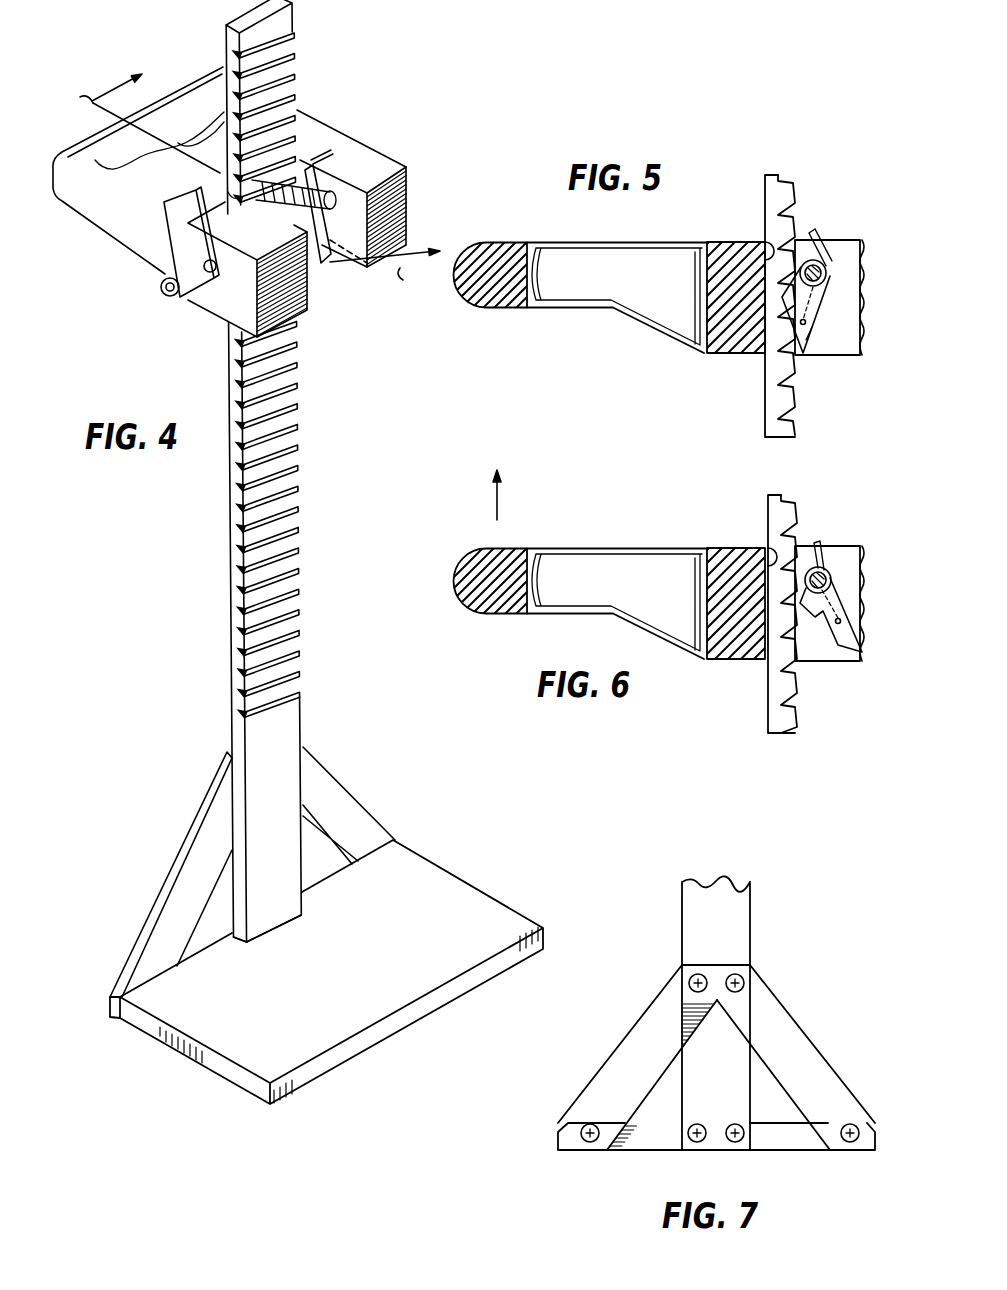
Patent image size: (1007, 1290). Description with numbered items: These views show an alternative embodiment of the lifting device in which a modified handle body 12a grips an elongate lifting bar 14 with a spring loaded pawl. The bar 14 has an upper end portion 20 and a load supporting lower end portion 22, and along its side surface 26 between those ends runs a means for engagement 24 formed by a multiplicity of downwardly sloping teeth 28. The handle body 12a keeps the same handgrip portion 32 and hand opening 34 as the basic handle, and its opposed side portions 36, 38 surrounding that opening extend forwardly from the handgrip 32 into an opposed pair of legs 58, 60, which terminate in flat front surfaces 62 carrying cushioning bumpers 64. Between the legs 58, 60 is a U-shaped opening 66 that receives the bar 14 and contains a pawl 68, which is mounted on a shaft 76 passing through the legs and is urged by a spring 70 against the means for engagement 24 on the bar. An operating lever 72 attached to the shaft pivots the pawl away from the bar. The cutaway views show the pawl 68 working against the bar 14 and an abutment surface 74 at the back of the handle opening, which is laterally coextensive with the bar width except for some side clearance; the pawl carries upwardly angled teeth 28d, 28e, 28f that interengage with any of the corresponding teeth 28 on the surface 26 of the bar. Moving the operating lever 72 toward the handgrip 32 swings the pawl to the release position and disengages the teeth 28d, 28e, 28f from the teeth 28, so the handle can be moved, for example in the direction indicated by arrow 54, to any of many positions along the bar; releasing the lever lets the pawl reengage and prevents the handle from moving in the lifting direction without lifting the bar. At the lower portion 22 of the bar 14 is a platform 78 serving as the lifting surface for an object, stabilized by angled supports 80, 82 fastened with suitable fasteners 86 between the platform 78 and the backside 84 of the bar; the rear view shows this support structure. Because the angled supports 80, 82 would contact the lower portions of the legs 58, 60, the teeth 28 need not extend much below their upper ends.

In FIG. 4, the modified handle body 12a is at (252, 207).
In FIG. 4, the bar 14 is at (238, 471).
In FIG. 5, the bar 14 is at (739, 293).
In FIG. 6, the bar 14 is at (759, 612).
In FIG. 7, the bar 14 is at (749, 1013).
In FIG. 4, the upper end portion 20 is at (287, 20).
In FIG. 4, the lower end portion 22 is at (232, 898).
In FIG. 4, the means for engagement 24 is at (298, 376).
In FIG. 4, the side surface 26 is at (285, 732).
In FIG. 4, the teeth 28 is at (294, 462).
In FIG. 5, the teeth 28 is at (792, 195).
In FIG. 6, the teeth 28 is at (793, 520).
In FIG. 5, the pawl tooth 28d is at (788, 293).
In FIG. 6, the pawl tooth 28d is at (817, 622).
In FIG. 5, the pawl tooth 28e is at (785, 331).
In FIG. 6, the pawl tooth 28e is at (795, 633).
In FIG. 5, the pawl tooth 28f is at (785, 363).
In FIG. 6, the pawl tooth 28f is at (843, 654).
In FIG. 4, the handgrip portion 32 is at (141, 153).
In FIG. 5, the handgrip portion 32 is at (630, 298).
In FIG. 6, the handgrip portion 32 is at (630, 610).
In FIG. 4, the hand opening 34 is at (159, 140).
In FIG. 5, the hand opening 34 is at (494, 335).
In FIG. 6, the hand opening 34 is at (494, 655).
In FIG. 4, the side portion 36 is at (98, 210).
In FIG. 4, the side portion 38 is at (307, 110).
In FIG. 6, the direction of upward movement 54 is at (500, 500).
In FIG. 4, the leg 58 is at (367, 143).
In FIG. 4, the leg 60 is at (320, 222).
In FIG. 4, the flat front surface 62 is at (403, 192).
In FIG. 4, the cushioning bumper 64 is at (339, 222).
In FIG. 5, the cushioning bumper 64 is at (831, 299).
In FIG. 6, the cushioning bumper 64 is at (844, 574).
In FIG. 4, the U-shaped opening 66 is at (327, 267).
In FIG. 4, the pawl 68 is at (293, 210).
In FIG. 5, the pawl 68 is at (812, 327).
In FIG. 4, the spring 70 is at (331, 150).
In FIG. 5, the spring 70 is at (815, 230).
In FIG. 6, the spring 70 is at (820, 540).
In FIG. 4, the operating lever 72 is at (162, 291).
In FIG. 4, the abutment surface 74 is at (228, 192).
In FIG. 5, the abutment surface 74 is at (762, 243).
In FIG. 6, the abutment surface 74 is at (765, 547).
In FIG. 5, the shaft 76 is at (828, 272).
In FIG. 6, the shaft 76 is at (831, 609).
In FIG. 4, the platform 78 is at (326, 972).
In FIG. 7, the platform 78 is at (650, 1140).
In FIG. 4, the angled support 80 is at (342, 805).
In FIG. 7, the angled support 80 is at (655, 1033).
In FIG. 4, the angled support 82 is at (188, 850).
In FIG. 7, the angled support 82 is at (792, 1021).
In FIG. 7, the backside of the lifting bar 84 is at (712, 912).
In FIG. 7, the fasteners 86 is at (691, 978).